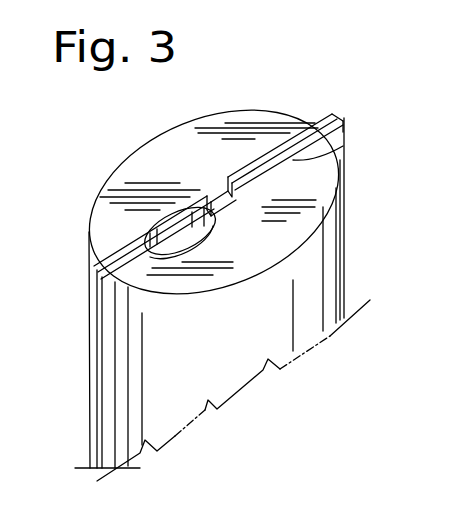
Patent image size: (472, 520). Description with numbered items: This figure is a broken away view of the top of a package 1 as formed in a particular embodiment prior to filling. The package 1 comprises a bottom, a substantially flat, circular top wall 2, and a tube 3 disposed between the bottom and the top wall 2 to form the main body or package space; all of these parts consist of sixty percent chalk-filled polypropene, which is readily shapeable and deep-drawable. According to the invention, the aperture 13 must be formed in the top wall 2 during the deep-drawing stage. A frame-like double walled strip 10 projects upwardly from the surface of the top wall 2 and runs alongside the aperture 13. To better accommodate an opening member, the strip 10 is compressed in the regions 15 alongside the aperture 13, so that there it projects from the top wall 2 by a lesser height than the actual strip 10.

The package 1 is at (199, 430).
The top wall 2 is at (340, 213).
The tube 3 is at (312, 322).
The double walled strip 10 is at (332, 138).
The aperture 13 is at (153, 230).
The regions 15 is at (207, 200).